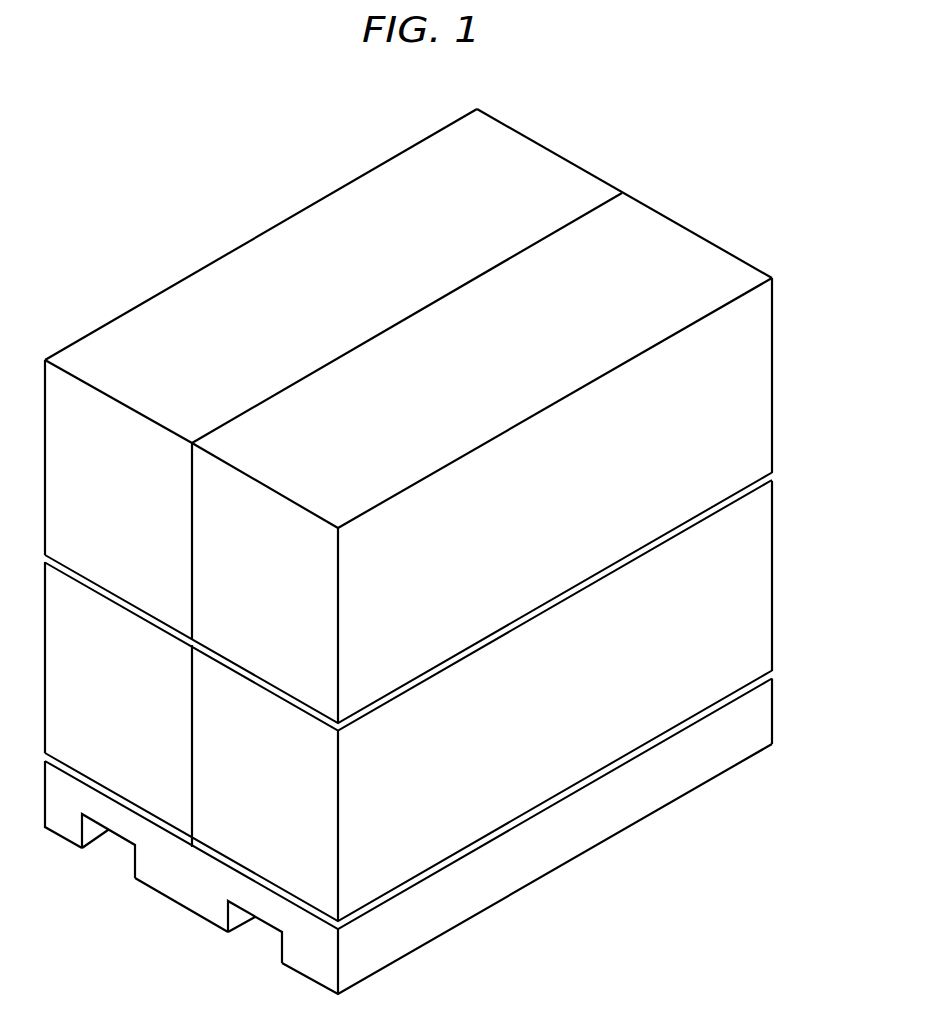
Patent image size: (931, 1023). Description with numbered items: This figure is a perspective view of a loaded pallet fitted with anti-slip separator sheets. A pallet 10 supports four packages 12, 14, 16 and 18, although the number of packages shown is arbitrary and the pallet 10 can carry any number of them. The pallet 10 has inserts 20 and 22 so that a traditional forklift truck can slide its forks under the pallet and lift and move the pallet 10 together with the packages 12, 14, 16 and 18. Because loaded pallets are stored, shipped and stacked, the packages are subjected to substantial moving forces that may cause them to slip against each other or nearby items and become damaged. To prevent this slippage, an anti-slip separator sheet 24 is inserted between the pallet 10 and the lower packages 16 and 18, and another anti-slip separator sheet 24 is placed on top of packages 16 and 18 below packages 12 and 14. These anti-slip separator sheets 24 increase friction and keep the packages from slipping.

The pallet 10 is at (627, 805).
The package 12 is at (124, 514).
The package 14 is at (270, 600).
The package 16 is at (124, 714).
The package 18 is at (270, 802).
The insert 20 is at (110, 847).
The insert 22 is at (262, 930).
The anti-slip separator sheet 24 is at (730, 498).